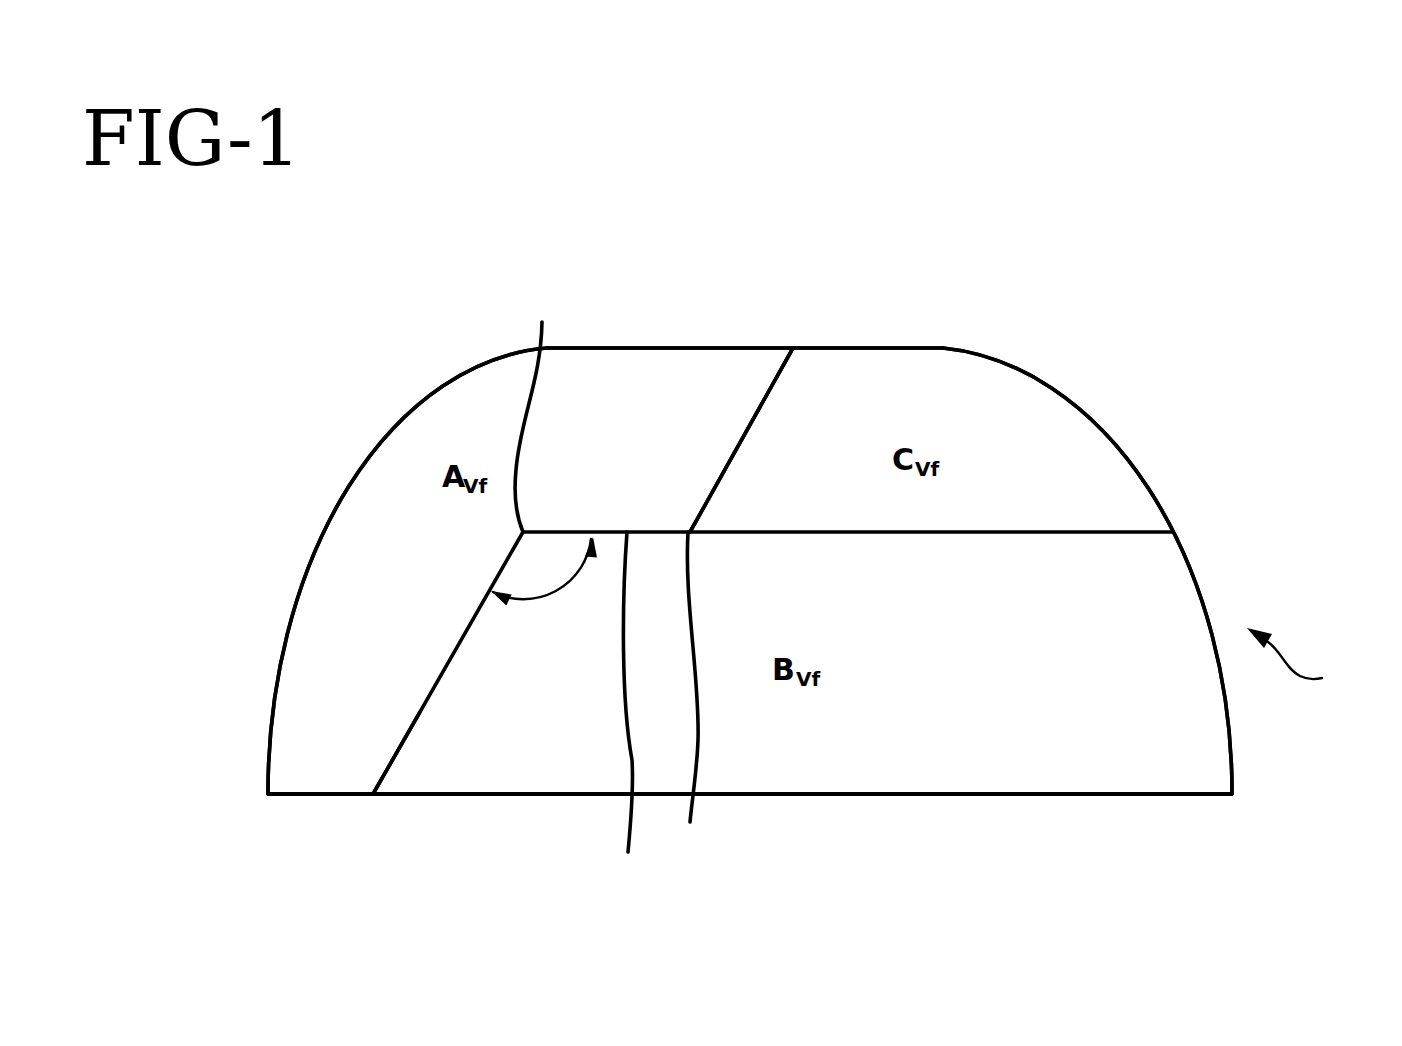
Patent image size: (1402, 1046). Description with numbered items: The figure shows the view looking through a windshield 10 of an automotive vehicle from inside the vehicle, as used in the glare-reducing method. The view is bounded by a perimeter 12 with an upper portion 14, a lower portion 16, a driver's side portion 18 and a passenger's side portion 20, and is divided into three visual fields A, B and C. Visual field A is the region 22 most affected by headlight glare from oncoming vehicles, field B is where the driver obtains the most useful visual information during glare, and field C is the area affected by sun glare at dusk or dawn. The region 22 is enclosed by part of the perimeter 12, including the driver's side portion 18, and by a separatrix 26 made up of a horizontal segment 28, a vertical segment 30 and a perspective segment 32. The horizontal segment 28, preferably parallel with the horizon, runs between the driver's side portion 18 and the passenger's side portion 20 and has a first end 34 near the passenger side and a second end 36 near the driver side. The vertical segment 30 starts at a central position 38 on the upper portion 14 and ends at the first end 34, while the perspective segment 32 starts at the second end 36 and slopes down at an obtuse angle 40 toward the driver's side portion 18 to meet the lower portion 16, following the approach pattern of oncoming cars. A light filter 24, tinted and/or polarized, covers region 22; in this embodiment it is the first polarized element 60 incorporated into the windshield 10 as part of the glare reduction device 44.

The windshield 10 is at (1288, 733).
The perimeter 12 is at (1067, 795).
The upper portion 14 is at (691, 348).
The lower portion 16 is at (870, 795).
The driver's side portion 18 is at (360, 469).
The passenger's side portion 20 is at (1138, 470).
The region 22 is at (373, 544).
The light filter 24 is at (473, 370).
The separatrix 26 is at (418, 708).
The horizontal segment 28 is at (625, 709).
The vertical segment 30 is at (773, 390).
The perspective segment 32 is at (391, 768).
The first end 34 is at (692, 694).
The second end 36 is at (537, 410).
The central position 38 is at (792, 352).
The obtuse angle 40 is at (543, 598).
The glare reduction device 44 is at (1308, 663).
The first polarized element 60 is at (594, 373).